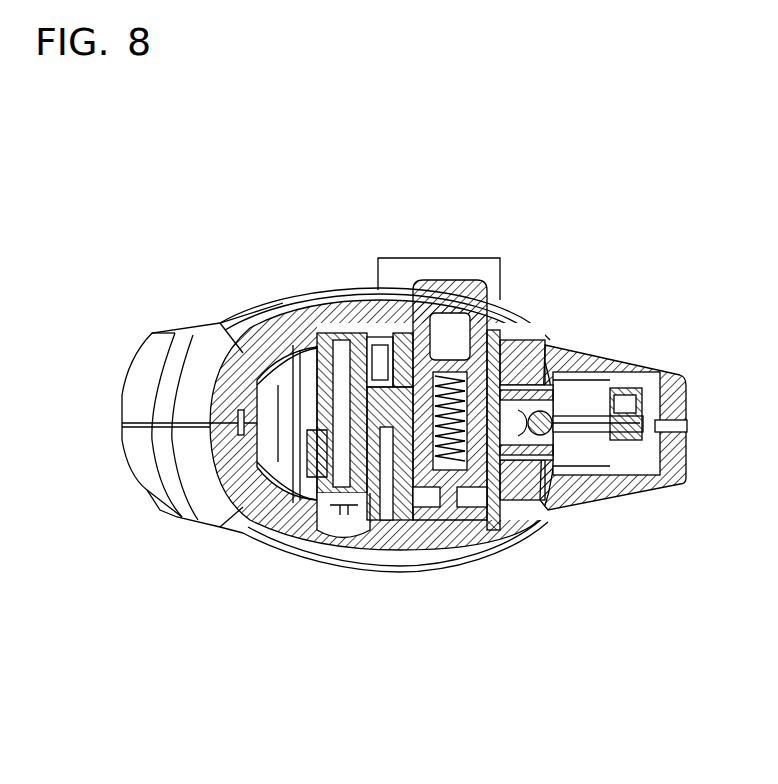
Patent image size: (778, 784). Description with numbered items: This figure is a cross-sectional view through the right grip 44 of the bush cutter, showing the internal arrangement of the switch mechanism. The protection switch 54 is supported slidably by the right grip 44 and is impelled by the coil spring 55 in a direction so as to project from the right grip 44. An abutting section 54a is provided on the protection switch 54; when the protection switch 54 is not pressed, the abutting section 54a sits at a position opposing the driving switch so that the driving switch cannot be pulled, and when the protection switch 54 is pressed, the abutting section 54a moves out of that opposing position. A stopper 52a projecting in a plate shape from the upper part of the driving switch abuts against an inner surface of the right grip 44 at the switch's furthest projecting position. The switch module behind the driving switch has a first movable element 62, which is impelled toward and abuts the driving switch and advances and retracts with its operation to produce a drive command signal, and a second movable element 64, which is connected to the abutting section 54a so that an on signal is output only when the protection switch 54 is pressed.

The right grip 44 is at (216, 300).
The protection switch 54 is at (446, 300).
The coil spring 55 is at (505, 312).
The abutting section 54a is at (505, 362).
The stopper 52a is at (622, 390).
The first movable element 62 is at (590, 498).
The second movable element 64 is at (535, 527).